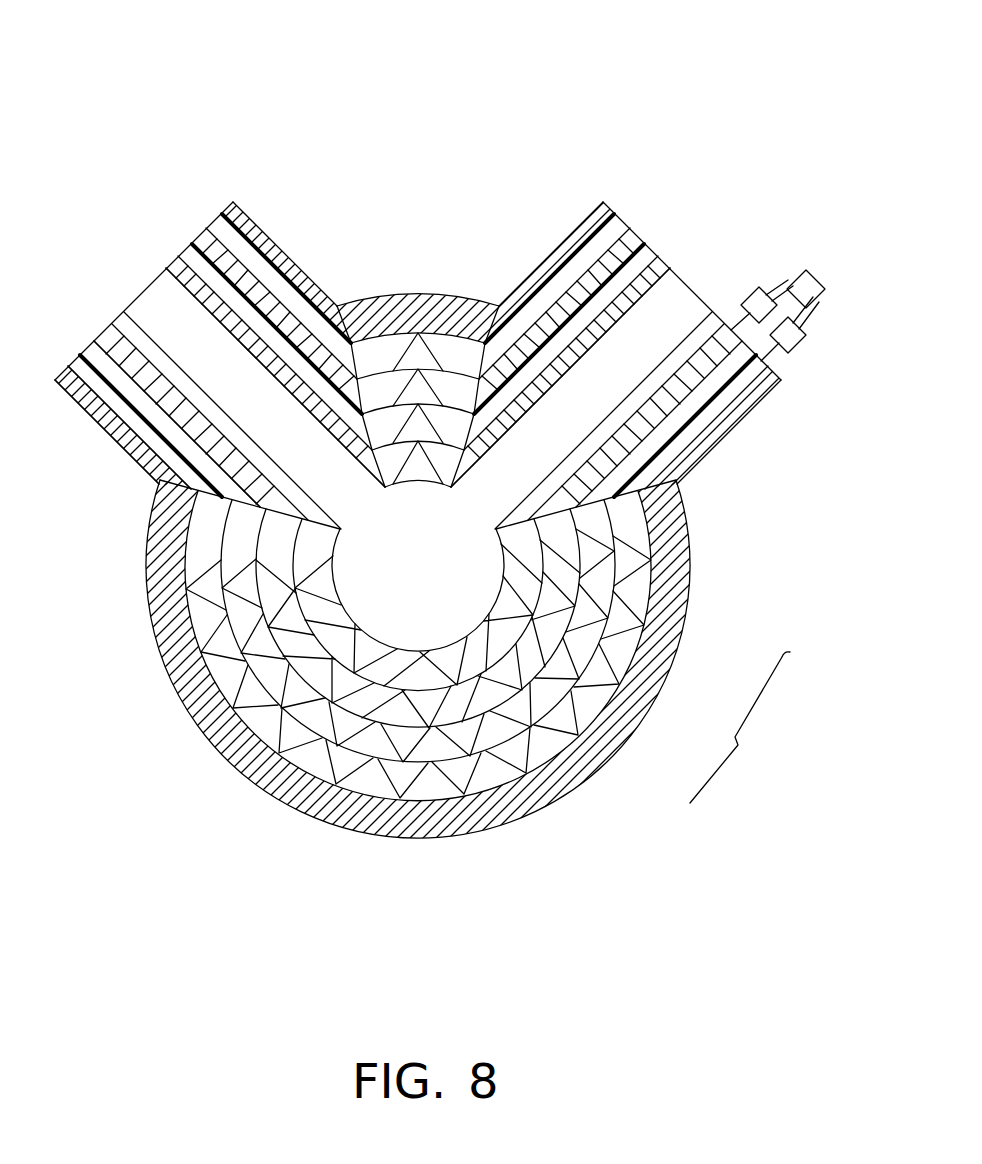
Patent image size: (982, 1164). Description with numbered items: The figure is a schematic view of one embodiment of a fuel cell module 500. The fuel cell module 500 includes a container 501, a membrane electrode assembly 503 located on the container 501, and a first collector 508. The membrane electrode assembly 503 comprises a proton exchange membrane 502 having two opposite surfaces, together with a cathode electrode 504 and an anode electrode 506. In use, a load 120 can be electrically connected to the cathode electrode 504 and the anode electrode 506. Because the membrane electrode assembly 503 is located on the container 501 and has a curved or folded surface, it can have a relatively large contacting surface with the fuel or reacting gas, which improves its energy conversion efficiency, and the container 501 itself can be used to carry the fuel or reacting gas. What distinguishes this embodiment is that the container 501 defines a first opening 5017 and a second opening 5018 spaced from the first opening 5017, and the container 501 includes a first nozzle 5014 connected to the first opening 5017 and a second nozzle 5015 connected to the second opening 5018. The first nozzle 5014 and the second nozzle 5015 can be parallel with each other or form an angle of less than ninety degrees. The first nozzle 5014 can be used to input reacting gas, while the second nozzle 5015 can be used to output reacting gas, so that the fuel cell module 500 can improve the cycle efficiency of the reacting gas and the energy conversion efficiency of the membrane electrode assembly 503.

The fuel cell module 500 is at (366, 116).
The container 501 is at (535, 555).
The proton exchange membrane 502 is at (545, 700).
The membrane electrode assembly 503 is at (744, 727).
The cathode electrode 504 is at (550, 625).
The anode electrode 506 is at (578, 785).
The first collector 508 is at (498, 805).
The load 120 is at (805, 287).
The first nozzle 5014 is at (612, 318).
The second nozzle 5015 is at (160, 478).
The first opening 5017 is at (480, 500).
The second opening 5018 is at (352, 512).